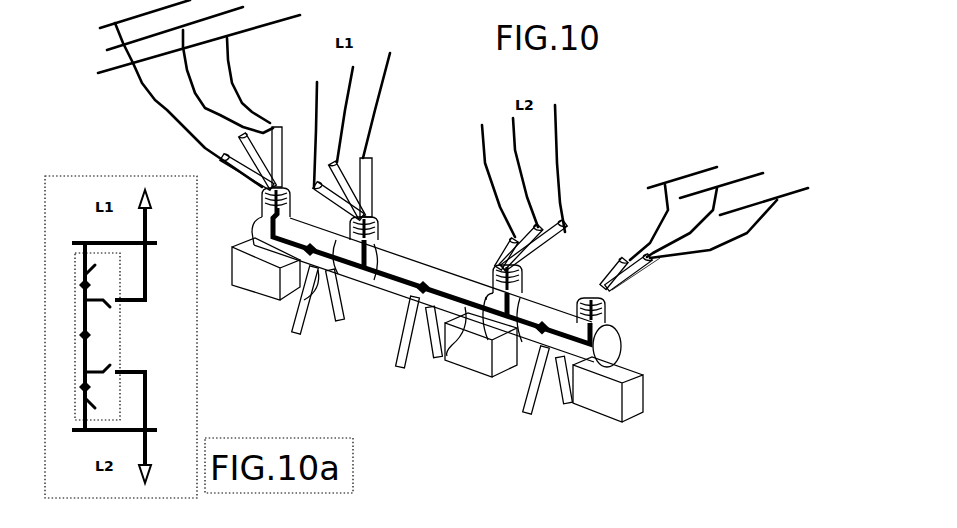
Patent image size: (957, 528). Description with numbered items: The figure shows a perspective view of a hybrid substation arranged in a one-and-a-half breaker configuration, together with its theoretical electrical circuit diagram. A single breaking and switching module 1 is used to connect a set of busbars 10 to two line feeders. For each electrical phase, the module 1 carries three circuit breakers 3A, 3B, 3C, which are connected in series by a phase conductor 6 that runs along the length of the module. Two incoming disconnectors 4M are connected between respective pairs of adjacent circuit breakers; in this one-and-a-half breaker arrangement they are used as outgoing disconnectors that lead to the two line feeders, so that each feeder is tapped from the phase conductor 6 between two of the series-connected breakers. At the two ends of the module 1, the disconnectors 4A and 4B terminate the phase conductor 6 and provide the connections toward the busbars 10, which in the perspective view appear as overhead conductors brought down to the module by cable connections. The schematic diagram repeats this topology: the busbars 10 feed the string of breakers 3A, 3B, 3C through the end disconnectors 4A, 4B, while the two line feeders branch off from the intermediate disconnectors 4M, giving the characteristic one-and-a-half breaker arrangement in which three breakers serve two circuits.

In FIG. 10, the breaking and switching module 1 is at (358, 300).
In FIG. 10A, the breaking and switching module 1 is at (68, 380).
In FIG. 10, the circuit breaker 3A is at (317, 290).
In FIG. 10, the circuit breaker 3B is at (417, 322).
In FIG. 10, the circuit breaker 3C is at (533, 373).
In FIG. 10, the disconnector 4A is at (264, 208).
In FIG. 10, the incoming disconnector 4M is at (378, 240).
In FIG. 10, the disconnector 4B is at (605, 327).
In FIG. 10, the phase conductor 6 is at (462, 332).
In FIG. 10, the busbars 10 is at (722, 148).
In FIG. 10A, the busbars 10 is at (170, 258).